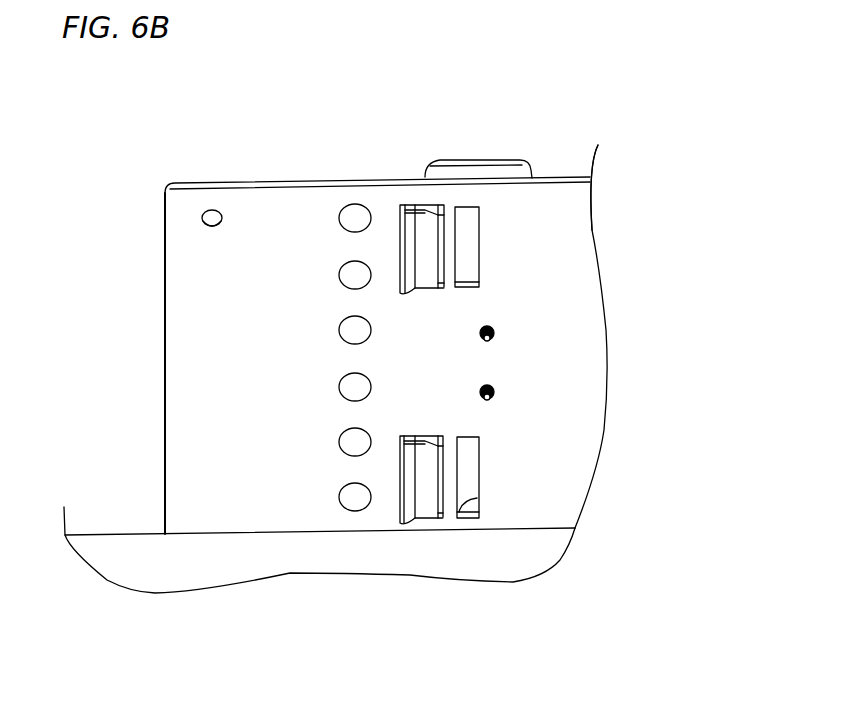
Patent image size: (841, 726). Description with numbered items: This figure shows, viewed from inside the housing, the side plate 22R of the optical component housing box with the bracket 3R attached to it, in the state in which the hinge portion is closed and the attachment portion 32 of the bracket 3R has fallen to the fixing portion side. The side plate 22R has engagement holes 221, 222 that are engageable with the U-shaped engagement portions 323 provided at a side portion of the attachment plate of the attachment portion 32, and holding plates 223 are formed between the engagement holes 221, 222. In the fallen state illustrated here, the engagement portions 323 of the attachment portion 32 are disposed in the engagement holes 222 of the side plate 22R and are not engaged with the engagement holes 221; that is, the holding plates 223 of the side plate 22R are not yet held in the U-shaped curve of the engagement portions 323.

The side plate 22R is at (205, 388).
The bracket 3R is at (535, 164).
The attachment portion 32 is at (517, 160).
The engagement portions 323 is at (420, 252).
The engagement holes 222 is at (443, 233).
The holding plates 223 is at (450, 228).
The engagement holes 221 is at (468, 227).